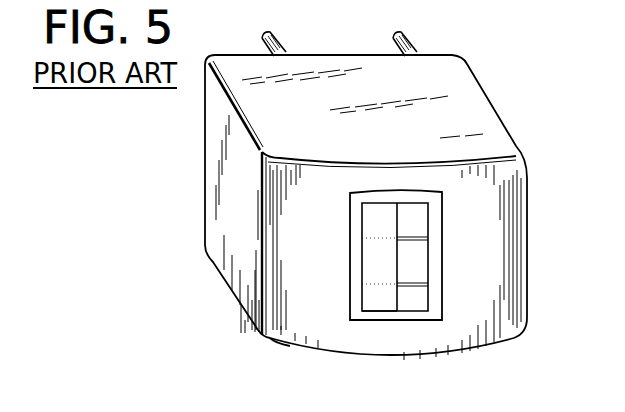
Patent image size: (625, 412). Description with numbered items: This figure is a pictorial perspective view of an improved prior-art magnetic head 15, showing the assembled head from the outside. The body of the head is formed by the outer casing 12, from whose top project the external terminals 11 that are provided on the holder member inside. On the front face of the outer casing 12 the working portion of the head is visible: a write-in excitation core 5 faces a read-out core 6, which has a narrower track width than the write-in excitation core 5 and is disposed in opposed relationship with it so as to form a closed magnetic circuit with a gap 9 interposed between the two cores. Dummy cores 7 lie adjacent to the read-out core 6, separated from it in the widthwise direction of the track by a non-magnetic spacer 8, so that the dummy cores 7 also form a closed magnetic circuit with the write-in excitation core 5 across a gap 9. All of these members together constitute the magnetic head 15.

The magnetic head 15 is at (492, 94).
The external terminals 11 is at (262, 45).
The write-in excitation core 5 is at (372, 297).
The read-out core 6 is at (414, 261).
The dummy cores 7 is at (420, 215).
The non-magnetic spacer 8 is at (397, 238).
The gap 9 is at (392, 306).
The outer casing 12 is at (277, 331).